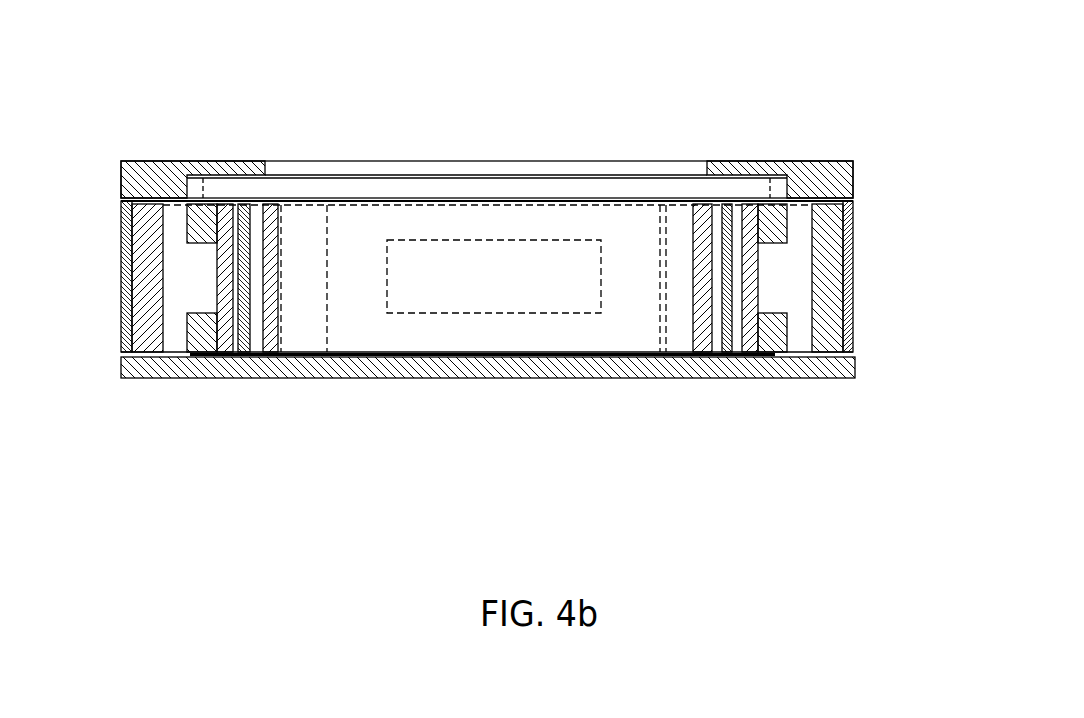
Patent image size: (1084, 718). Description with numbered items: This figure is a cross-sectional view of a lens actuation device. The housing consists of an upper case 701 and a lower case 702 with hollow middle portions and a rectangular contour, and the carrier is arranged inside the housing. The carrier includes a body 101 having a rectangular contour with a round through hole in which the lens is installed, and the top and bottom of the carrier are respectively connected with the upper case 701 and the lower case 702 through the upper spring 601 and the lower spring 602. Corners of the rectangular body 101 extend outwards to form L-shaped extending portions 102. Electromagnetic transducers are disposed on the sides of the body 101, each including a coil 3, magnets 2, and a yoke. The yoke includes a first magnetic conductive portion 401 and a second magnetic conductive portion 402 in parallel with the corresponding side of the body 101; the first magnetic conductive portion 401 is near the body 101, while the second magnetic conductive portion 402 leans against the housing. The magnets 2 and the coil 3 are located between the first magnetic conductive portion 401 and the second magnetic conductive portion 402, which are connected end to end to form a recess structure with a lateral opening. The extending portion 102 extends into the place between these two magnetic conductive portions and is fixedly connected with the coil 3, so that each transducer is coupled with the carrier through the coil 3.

The magnets 2 is at (148, 224).
The coil 3 is at (206, 322).
The body 101 is at (699, 257).
The extending portion 102 is at (741, 202).
The first magnetic conductive portion 401 is at (241, 343).
The second magnetic conductive portion 402 is at (128, 358).
The upper spring 601 is at (341, 207).
The lower spring 602 is at (461, 355).
The upper case 701 is at (774, 164).
The lower case 702 is at (684, 374).